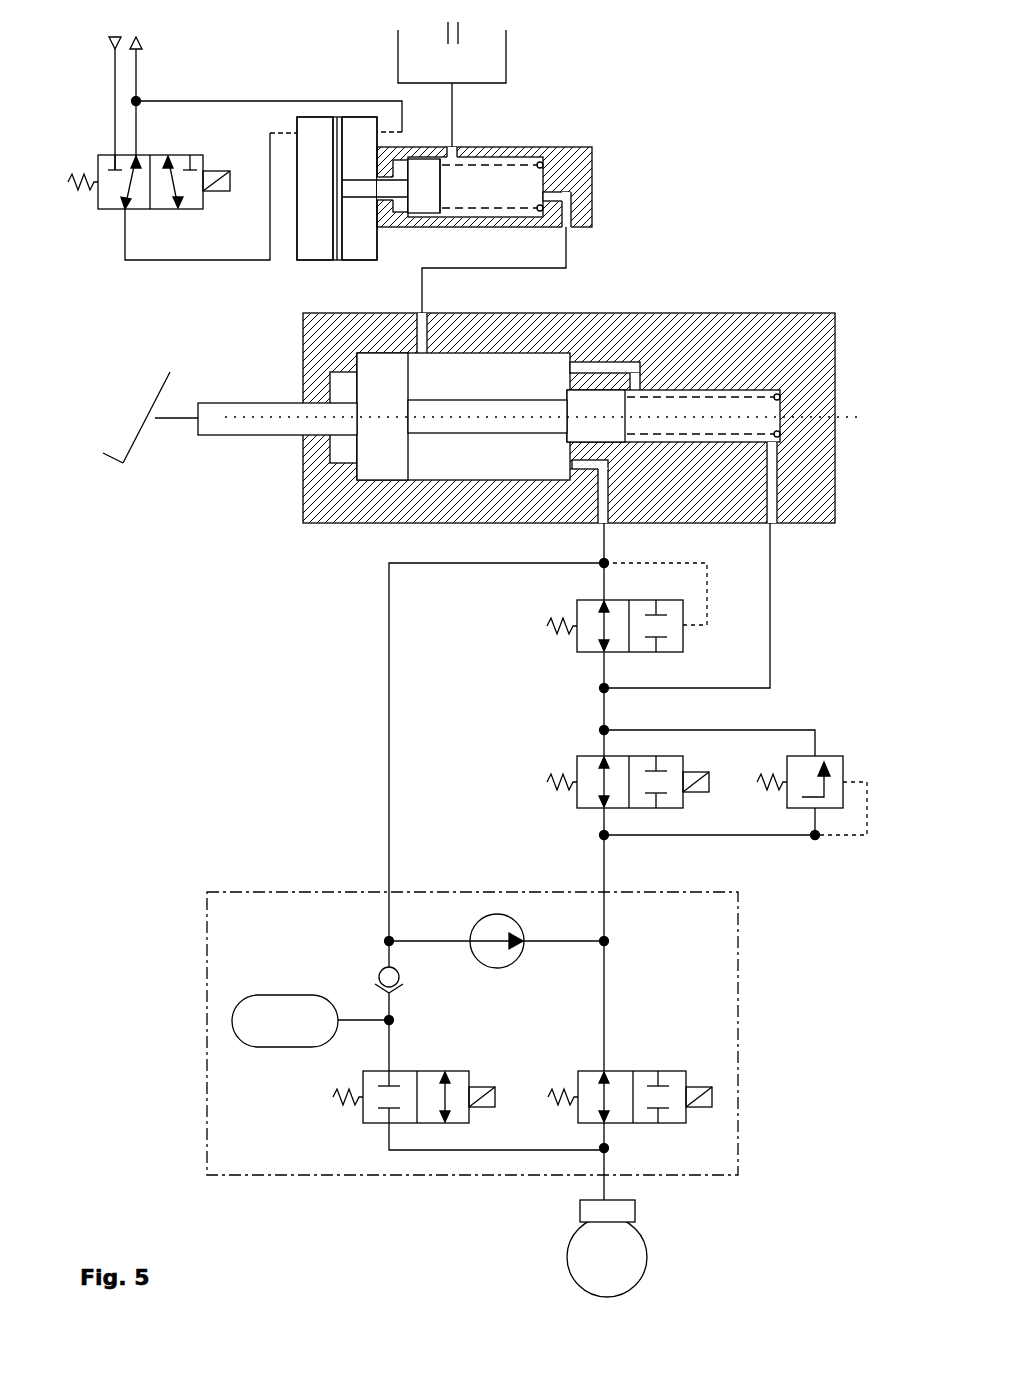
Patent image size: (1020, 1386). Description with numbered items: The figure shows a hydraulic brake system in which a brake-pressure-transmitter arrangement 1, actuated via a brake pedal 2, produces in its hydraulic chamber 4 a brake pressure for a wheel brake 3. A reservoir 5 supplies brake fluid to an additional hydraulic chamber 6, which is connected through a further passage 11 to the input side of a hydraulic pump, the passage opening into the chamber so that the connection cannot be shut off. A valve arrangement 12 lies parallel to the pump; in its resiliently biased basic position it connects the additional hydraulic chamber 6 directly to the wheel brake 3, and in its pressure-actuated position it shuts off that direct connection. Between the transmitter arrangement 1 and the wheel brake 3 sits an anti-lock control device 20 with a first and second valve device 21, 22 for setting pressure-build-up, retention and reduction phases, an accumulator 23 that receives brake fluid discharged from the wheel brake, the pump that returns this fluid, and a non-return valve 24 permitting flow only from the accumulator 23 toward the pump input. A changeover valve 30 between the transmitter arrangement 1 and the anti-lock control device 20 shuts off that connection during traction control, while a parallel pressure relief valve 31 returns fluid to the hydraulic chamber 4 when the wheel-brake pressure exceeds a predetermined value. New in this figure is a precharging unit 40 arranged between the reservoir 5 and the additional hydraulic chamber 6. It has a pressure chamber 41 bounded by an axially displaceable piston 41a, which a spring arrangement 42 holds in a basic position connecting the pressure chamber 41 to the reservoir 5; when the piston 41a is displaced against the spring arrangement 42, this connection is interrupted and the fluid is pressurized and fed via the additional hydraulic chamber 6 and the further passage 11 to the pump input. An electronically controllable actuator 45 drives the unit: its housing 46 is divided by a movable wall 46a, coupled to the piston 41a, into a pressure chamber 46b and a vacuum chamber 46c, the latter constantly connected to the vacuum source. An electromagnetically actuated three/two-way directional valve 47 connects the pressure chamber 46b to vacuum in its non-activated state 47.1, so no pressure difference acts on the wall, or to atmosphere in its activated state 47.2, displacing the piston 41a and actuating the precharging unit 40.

The brake-pressure-transmitter arrangement 1 is at (832, 263).
The brake pedal 2 is at (150, 420).
The wheel brake 3 is at (628, 1208).
The hydraulic chamber 4 is at (697, 424).
The reservoir 5 is at (461, 73).
The additional hydraulic chamber 6 is at (484, 386).
The further passage 11 is at (608, 490).
The valve arrangement 12 is at (577, 652).
The anti-lock control device 20 is at (740, 891).
The first valve device 21 is at (692, 1070).
The second valve device 22 is at (477, 1070).
The accumulator 23 is at (300, 1036).
The non-return valve 24 is at (380, 974).
The changeover valve 30 is at (577, 756).
The pressure relief valve 31 is at (843, 756).
The precharging unit 40 is at (622, 82).
The pressure chamber 41 is at (506, 194).
The piston 41a is at (430, 200).
The spring arrangement 42 is at (507, 145).
The electronically controllable actuator 45 is at (248, 42).
The housing 46 is at (298, 115).
The movable wall 46a is at (340, 145).
The pressure chamber 46b is at (313, 252).
The vacuum chamber 46c is at (392, 282).
The three/two-way directional valve 47 is at (98, 155).
The non-activated state 47.1 is at (108, 198).
The activated state 47.2 is at (192, 200).